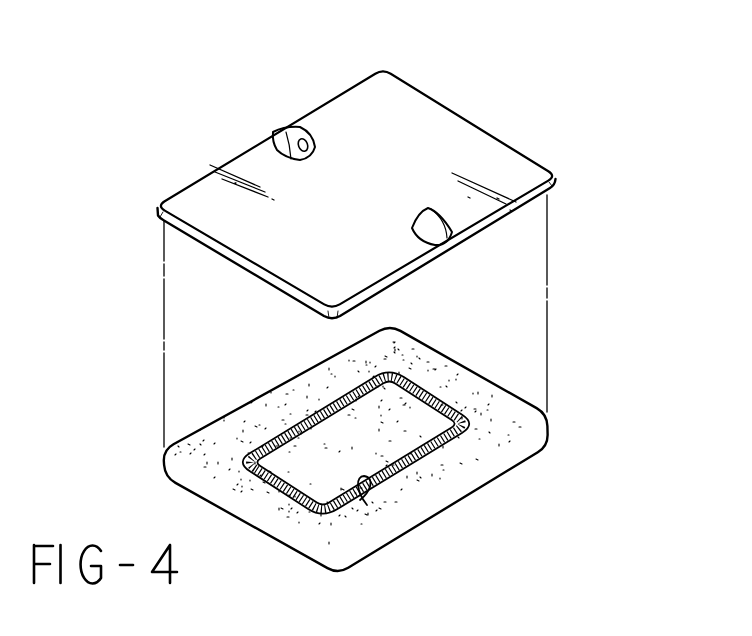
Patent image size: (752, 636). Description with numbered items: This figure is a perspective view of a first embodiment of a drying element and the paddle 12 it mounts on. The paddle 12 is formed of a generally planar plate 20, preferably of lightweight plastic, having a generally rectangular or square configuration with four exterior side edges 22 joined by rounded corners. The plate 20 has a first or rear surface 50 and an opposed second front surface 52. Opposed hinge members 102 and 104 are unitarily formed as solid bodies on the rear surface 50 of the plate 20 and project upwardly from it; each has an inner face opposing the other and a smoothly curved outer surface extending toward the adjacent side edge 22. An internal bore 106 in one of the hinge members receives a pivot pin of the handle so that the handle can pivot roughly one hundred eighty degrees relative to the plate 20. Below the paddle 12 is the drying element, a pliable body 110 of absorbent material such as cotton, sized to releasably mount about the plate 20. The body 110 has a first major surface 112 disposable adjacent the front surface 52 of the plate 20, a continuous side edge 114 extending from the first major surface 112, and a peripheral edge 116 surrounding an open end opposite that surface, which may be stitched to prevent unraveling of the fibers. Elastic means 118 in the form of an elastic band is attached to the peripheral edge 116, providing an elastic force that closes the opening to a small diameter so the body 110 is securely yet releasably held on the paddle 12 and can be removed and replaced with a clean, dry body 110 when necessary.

The paddle 12 is at (328, 86).
The plate 20 is at (367, 108).
The side edges 22 is at (306, 116).
The first or rear surface 50 is at (197, 203).
The second front surface 52 is at (524, 208).
The hinge member 102 is at (284, 146).
The hinge member 104 is at (420, 213).
The internal bore 106 is at (305, 152).
The pliable body 110 is at (502, 488).
The first major surface 112 is at (440, 434).
The continuous side edge 114 is at (423, 506).
The peripheral edge 116 is at (367, 505).
The elastic means 118 is at (284, 430).